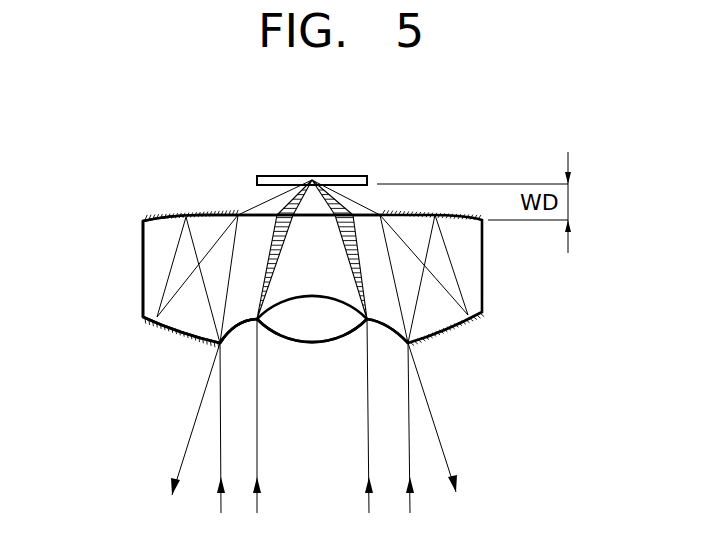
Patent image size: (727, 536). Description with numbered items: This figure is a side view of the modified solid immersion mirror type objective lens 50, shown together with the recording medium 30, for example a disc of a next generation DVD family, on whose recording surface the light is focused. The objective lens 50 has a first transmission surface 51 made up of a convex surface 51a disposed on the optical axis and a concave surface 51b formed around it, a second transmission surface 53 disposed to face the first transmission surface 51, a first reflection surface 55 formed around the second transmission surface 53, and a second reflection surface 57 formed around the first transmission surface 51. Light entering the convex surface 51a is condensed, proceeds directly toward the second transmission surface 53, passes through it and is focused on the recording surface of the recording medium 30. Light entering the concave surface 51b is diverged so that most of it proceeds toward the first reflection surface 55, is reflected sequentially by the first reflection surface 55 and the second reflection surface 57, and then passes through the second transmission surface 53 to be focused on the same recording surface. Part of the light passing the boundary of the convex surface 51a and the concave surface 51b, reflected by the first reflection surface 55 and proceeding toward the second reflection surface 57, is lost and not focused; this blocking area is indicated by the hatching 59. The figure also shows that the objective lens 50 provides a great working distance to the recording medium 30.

The recording medium 30 is at (260, 176).
The objective lens 50 is at (130, 339).
The first transmission surface 51 is at (357, 402).
The convex surface 51a is at (338, 341).
The concave surface 51b is at (238, 331).
The second transmission surface 53 is at (352, 214).
The first reflection surface 55 is at (197, 215).
The second reflection surface 57 is at (175, 336).
The hatching 59 is at (362, 215).